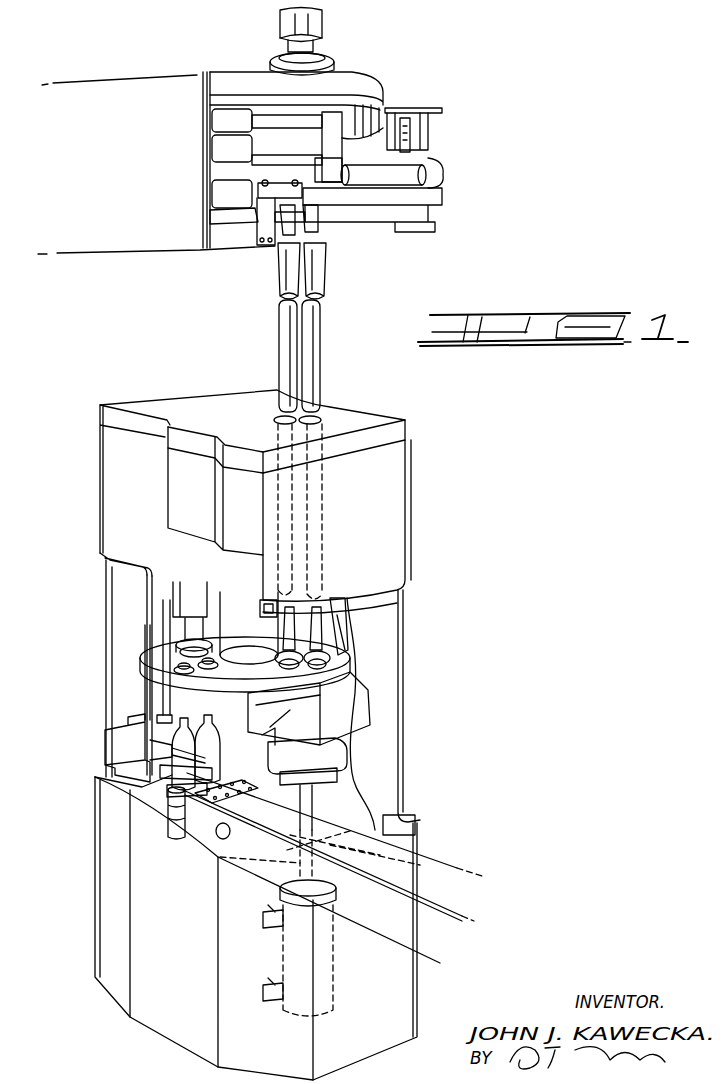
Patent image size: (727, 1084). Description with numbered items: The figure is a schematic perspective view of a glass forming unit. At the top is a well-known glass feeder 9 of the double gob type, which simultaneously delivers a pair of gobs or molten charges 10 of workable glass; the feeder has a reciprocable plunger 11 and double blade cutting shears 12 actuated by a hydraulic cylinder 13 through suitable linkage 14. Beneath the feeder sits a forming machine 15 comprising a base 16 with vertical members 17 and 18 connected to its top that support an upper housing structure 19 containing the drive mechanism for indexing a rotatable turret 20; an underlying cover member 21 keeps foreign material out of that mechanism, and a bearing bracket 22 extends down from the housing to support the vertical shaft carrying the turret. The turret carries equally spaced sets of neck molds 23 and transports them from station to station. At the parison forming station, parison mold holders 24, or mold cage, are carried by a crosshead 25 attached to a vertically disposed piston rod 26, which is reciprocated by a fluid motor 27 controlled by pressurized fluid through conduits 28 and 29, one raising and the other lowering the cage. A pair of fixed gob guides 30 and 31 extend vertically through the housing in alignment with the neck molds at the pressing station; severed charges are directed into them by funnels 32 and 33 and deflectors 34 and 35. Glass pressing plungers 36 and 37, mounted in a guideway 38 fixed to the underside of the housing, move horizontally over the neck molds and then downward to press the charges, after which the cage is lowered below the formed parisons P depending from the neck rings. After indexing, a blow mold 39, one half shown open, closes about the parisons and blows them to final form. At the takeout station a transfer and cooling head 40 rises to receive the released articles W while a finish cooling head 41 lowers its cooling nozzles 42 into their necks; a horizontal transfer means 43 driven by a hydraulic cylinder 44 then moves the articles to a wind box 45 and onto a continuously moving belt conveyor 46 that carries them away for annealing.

The glass feeder 9 is at (402, 95).
The gobs or molten charges 10 is at (318, 228).
The reciprocable plunger 11 is at (312, 25).
The double blade cutting shears 12 is at (265, 183).
The hydraulic cylinder 13 is at (393, 157).
The linkage 14 is at (440, 192).
The forming machine 15 is at (90, 502).
The base 16 is at (113, 913).
The vertical member 17 is at (120, 607).
The vertical member 18 is at (393, 707).
The upper housing structure 19 is at (397, 505).
The rotatable turret 20 is at (340, 657).
The cover member 21 is at (402, 432).
The bearing bracket 22 is at (255, 613).
The neck molds 23 is at (173, 680).
The parison mold holders 24 is at (350, 743).
The crosshead 25 is at (340, 753).
The piston rod 26 is at (313, 797).
The fluid motor 27 is at (332, 972).
The conduit 28 is at (270, 918).
The conduit 29 is at (267, 997).
The fixed gob guide 30 is at (313, 517).
The fixed gob guide 31 is at (287, 495).
The funnel 32 is at (310, 272).
The funnel 33 is at (287, 268).
The deflector 34 is at (310, 347).
The deflector 35 is at (283, 340).
The glass pressing plunger 36 is at (323, 642).
The glass pressing plunger 37 is at (267, 630).
The guideway 38 is at (337, 607).
The blow mold 39 is at (160, 713).
The transfer and cooling head 40 is at (177, 803).
The finish cooling head 41 is at (176, 646).
The cooling nozzles 42 is at (208, 672).
The horizontal transfer means 43 is at (170, 781).
The hydraulic cylinder 44 is at (120, 742).
The wind box 45 is at (205, 797).
The belt conveyor 46 is at (433, 872).
The formed articles W is at (177, 800).
The formed parisons P is at (262, 740).